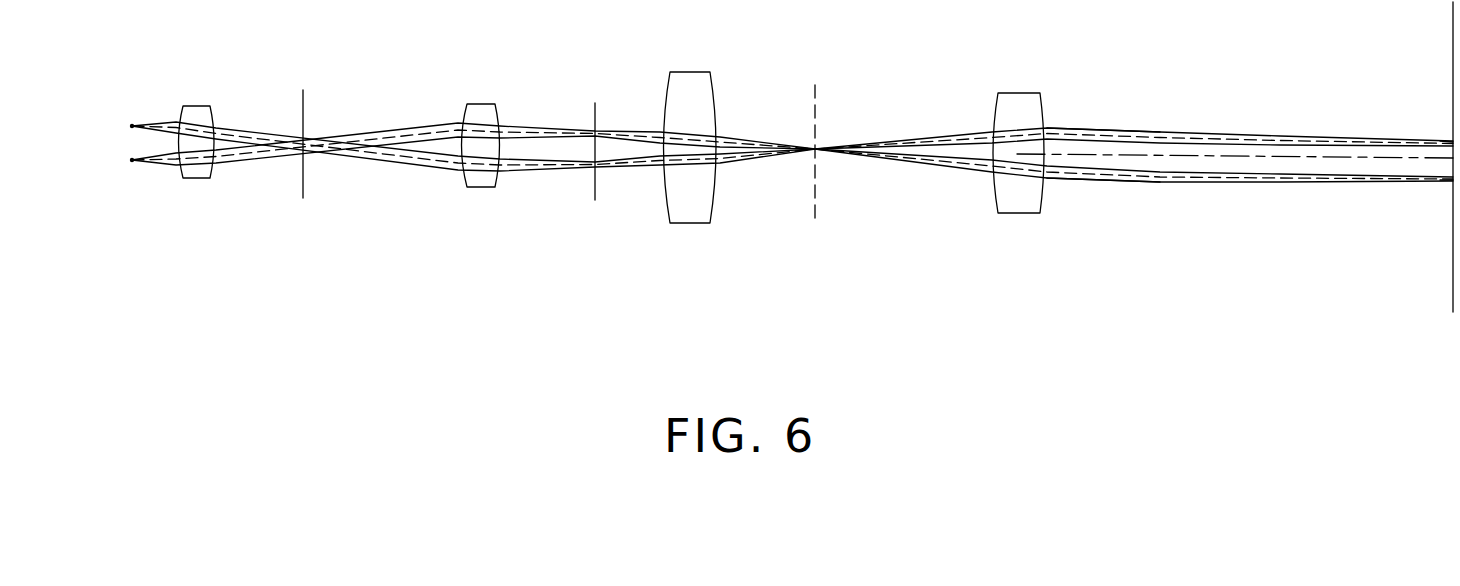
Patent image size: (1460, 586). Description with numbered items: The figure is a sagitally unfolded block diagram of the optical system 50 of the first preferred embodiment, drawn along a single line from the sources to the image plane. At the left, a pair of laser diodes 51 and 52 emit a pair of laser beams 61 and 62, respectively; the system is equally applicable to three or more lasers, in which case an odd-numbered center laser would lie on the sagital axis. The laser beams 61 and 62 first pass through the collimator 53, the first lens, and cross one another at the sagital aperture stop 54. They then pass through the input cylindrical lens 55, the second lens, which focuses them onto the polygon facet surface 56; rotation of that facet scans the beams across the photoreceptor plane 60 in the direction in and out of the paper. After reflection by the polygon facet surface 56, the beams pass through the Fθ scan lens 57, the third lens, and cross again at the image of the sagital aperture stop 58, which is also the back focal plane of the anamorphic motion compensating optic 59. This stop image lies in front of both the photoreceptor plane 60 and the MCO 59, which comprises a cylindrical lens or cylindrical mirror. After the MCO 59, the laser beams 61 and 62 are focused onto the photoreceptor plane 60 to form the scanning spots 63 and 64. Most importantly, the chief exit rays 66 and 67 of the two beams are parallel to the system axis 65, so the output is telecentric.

The optical system 50 is at (417, 354).
The laser diode 51 is at (132, 124).
The laser diode 52 is at (132, 162).
The collimator 53 is at (197, 179).
The sagital aperture stop 54 is at (304, 100).
The input cylindrical lens 55 is at (477, 189).
The polygon facet surface 56 is at (597, 108).
The Fθ scan lens 57 is at (695, 224).
The image of the sagital aperture stop 58 is at (815, 187).
The anamorphic motion compensating optic 59 is at (1027, 214).
The photoreceptor plane 60 is at (1453, 272).
The laser beam 61 is at (402, 170).
The laser beam 62 is at (405, 126).
The scanning spot 63 is at (1453, 140).
The scanning spot 64 is at (1453, 183).
The system axis 65 is at (1208, 154).
The chief exit ray 66 is at (1123, 135).
The chief exit ray 67 is at (1133, 178).